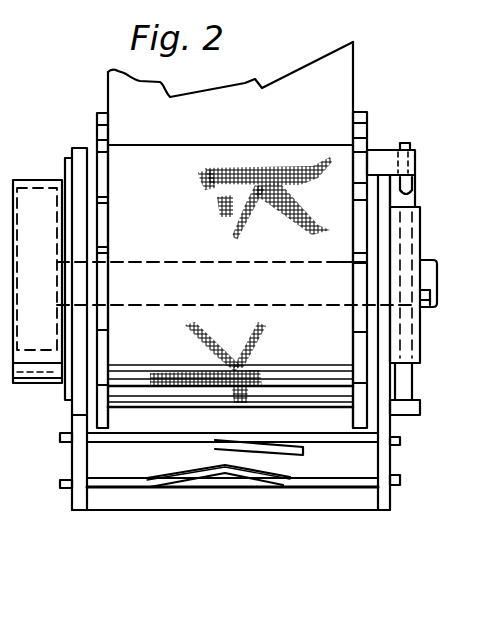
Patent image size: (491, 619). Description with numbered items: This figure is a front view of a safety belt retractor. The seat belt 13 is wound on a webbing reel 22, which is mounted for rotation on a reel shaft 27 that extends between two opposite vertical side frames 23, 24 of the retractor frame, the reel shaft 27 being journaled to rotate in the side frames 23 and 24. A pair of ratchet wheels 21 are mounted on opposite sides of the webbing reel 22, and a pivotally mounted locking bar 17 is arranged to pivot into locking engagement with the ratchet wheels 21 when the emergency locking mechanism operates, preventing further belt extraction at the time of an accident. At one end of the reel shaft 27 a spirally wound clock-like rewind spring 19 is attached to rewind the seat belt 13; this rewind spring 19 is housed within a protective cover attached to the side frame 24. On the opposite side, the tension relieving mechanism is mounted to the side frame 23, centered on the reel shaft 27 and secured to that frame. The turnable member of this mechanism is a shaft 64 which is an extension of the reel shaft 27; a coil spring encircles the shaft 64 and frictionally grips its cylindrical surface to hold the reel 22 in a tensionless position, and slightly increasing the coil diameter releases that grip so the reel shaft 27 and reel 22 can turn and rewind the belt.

The seat belt 13 is at (353, 60).
The locking bar 17 is at (148, 433).
The rewind spring 19 is at (46, 158).
The ratchet wheels 21 is at (108, 345).
The webbing reel 22 is at (319, 426).
The side frame 23 is at (417, 153).
The side frame 24 is at (80, 148).
The reel shaft 27 is at (178, 228).
The shaft 64 is at (428, 308).